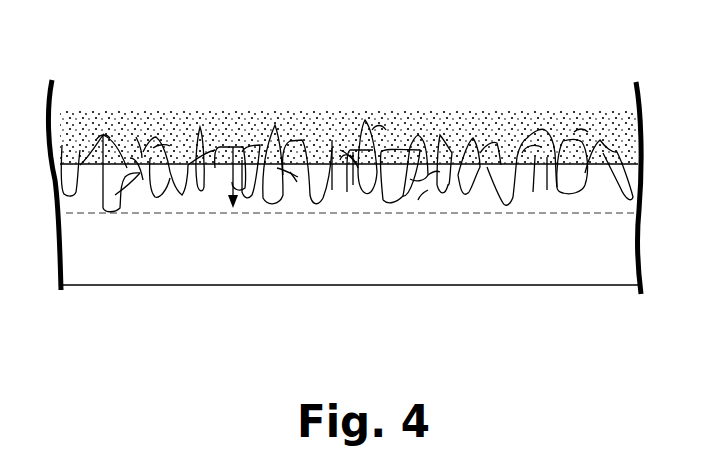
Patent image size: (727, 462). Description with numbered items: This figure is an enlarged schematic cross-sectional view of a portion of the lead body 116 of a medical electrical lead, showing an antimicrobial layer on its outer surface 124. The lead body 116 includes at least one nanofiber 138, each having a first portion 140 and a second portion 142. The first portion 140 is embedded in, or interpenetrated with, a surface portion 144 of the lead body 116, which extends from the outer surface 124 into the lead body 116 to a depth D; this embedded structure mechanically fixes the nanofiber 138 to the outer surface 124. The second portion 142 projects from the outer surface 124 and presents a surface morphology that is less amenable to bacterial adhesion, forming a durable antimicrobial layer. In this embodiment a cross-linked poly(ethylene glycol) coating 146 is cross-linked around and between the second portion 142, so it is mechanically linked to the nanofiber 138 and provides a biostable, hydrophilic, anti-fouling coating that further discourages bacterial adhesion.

The lead body 116 is at (517, 292).
The outer surface 124 is at (338, 165).
The nanofiber 138 is at (121, 128).
The first portion 140 is at (128, 177).
The second portion 142 is at (132, 195).
The surface portion 144 is at (424, 207).
The poly(ethylene glycol) coating 146 is at (483, 111).
The depth D is at (233, 185).